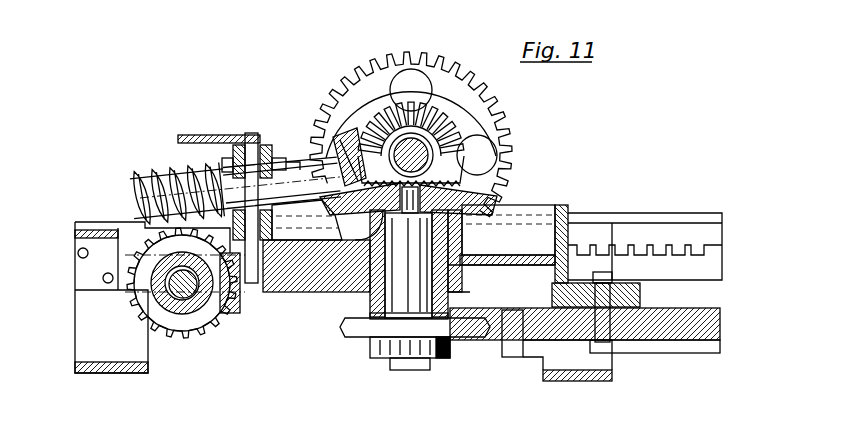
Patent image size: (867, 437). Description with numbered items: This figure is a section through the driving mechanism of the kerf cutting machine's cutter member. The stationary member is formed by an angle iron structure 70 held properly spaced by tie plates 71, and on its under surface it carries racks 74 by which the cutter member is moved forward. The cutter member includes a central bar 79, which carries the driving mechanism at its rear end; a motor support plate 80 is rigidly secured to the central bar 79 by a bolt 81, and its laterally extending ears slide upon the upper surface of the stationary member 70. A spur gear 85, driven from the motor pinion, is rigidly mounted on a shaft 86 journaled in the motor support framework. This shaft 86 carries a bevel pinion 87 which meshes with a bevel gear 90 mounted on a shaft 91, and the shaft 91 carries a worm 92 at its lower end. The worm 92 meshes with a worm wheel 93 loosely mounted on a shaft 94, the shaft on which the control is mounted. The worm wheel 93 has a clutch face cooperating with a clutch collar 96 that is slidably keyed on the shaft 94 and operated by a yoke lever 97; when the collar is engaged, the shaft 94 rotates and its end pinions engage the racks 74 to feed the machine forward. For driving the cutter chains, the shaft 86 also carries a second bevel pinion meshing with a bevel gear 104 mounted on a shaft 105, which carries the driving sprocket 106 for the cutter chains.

The angle iron structure 70 is at (686, 263).
The tie plates 71 is at (85, 335).
The racks 74 is at (630, 244).
The central bar 79 is at (686, 330).
The motor support plate 80 is at (556, 222).
The bolt 81 is at (642, 297).
The spur gear 85 is at (396, 52).
The shaft 86 is at (480, 145).
The bevel pinion 87 is at (428, 150).
The bevel gear 90 is at (362, 130).
The shaft 91 is at (292, 158).
The worm 92 is at (150, 182).
The worm wheel 93 is at (161, 340).
The shaft 94 is at (193, 303).
The clutch collar 96 is at (183, 313).
The yoke lever 97 is at (198, 135).
The bevel gear 104 is at (512, 185).
The shaft 105 is at (372, 301).
The driving sprocket 106 is at (378, 326).